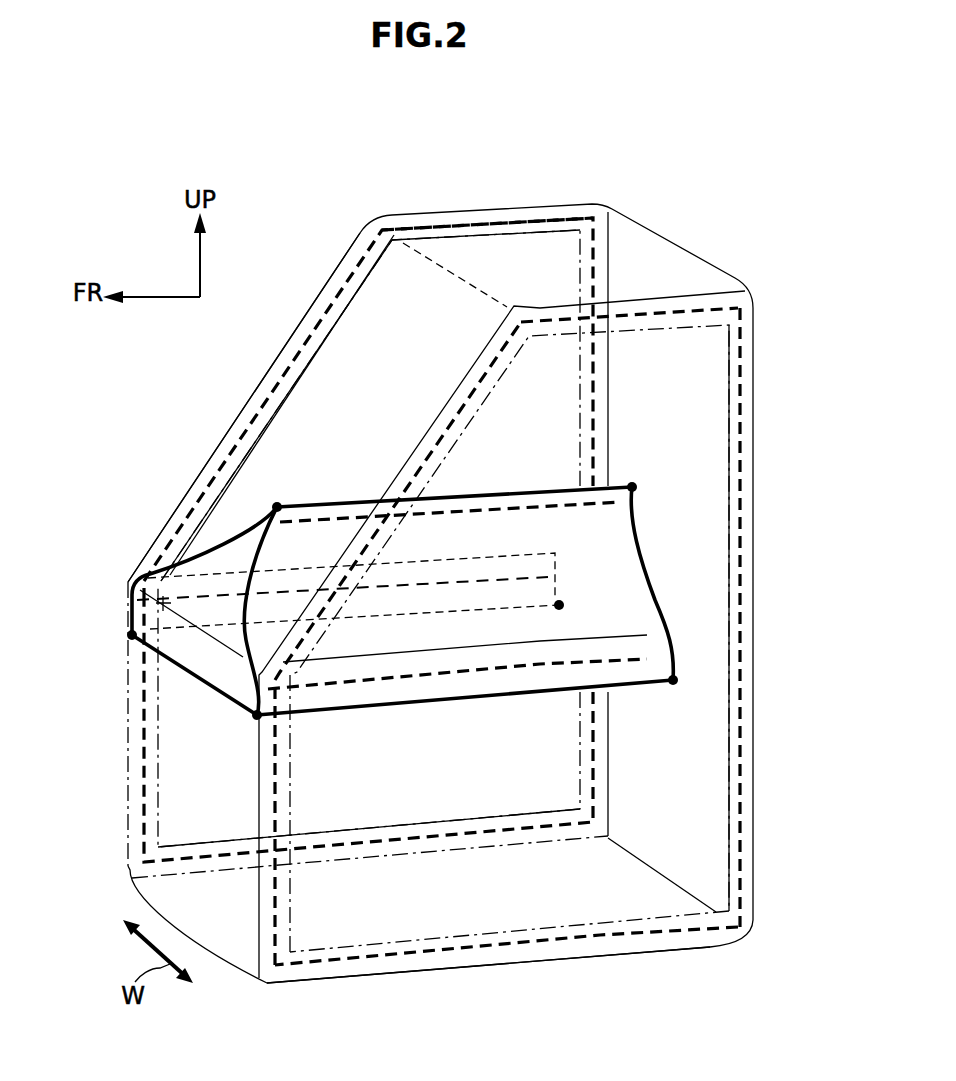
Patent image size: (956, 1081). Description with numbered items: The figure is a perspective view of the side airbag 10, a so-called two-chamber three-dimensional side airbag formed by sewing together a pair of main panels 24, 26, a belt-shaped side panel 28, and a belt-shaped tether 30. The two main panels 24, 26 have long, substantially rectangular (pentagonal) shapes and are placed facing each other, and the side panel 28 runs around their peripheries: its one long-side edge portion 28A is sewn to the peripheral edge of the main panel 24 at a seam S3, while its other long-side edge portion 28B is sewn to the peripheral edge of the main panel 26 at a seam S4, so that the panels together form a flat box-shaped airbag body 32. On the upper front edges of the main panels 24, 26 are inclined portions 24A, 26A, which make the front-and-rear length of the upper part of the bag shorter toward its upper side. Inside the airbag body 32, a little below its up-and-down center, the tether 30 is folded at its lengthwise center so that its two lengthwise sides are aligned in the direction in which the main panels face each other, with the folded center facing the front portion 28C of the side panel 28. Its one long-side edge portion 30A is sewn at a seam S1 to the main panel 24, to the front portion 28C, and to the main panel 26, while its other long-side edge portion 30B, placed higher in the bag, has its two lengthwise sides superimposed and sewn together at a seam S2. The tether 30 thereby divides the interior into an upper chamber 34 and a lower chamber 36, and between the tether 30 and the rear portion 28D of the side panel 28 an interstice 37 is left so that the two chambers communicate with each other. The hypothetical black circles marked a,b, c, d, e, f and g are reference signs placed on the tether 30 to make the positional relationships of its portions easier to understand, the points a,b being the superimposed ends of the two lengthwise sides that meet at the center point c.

The side airbag 10 is at (451, 589).
The main panel 24 is at (488, 1005).
The inclined portion 24A is at (502, 634).
The main panel 26 is at (369, 548).
The inclined portion 26A is at (244, 407).
The side panel 28 is at (444, 566).
The long-side edge portion 28A is at (629, 361).
The long-side edge portion 28B is at (307, 410).
The front portion 28C is at (180, 598).
The rear portion 28D is at (781, 617).
The tether 30 is at (524, 591).
The long-side edge portion 30A is at (465, 718).
The long-side edge portion 30B is at (454, 465).
The airbag body 32 is at (321, 514).
The upper chamber 34 is at (486, 314).
The lower chamber 36 is at (369, 802).
The interstice 37 is at (705, 618).
The seam S1 is at (457, 709).
The seam S2 is at (398, 643).
The seam S3 is at (506, 974).
The seam S4 is at (487, 193).
The reference signs a,b is at (655, 458).
The reference sign c is at (272, 483).
The reference sign d is at (586, 586).
The reference sign e is at (677, 717).
The reference sign f is at (109, 672).
The reference sign g is at (230, 748).